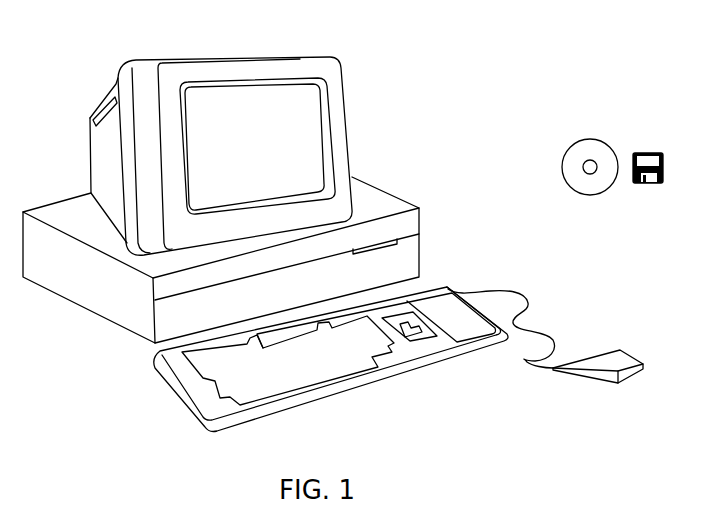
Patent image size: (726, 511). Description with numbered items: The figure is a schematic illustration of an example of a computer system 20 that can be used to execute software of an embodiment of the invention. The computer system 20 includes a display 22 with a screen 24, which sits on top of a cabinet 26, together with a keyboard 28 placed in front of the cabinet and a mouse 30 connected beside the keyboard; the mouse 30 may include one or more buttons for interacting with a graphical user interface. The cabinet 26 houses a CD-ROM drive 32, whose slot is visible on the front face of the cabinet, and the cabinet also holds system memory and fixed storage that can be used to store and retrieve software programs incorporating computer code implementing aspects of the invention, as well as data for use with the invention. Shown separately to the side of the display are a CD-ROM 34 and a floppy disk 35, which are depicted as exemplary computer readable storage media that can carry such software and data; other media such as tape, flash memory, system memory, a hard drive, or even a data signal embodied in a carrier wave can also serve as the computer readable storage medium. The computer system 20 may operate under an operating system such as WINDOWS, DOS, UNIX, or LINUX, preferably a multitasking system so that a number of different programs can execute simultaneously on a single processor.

The computer system 20 is at (521, 40).
The display 22 is at (348, 150).
The screen 24 is at (317, 103).
The cabinet 26 is at (110, 328).
The keyboard 28 is at (340, 394).
The mouse 30 is at (632, 360).
The CD-ROM drive 32 is at (398, 238).
The CD-ROM 34 is at (590, 138).
The floppy disk 35 is at (650, 152).